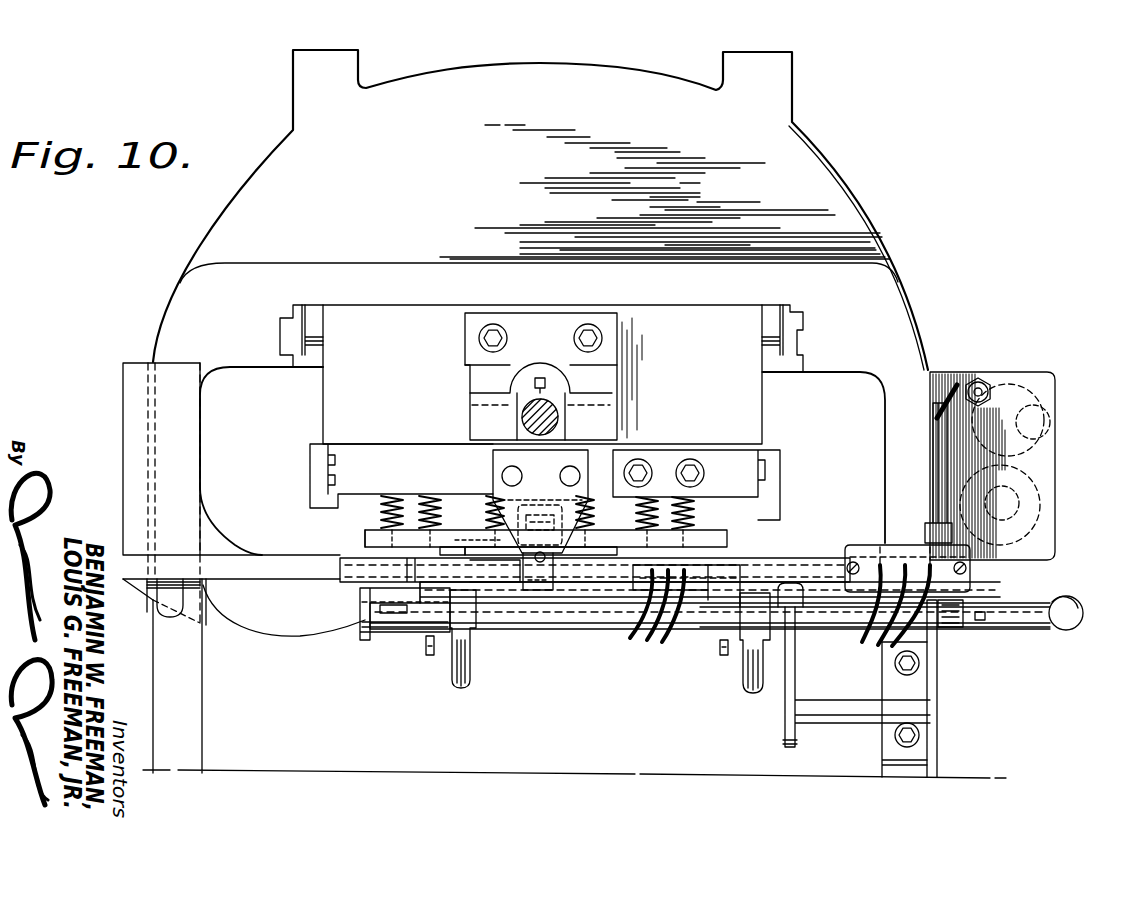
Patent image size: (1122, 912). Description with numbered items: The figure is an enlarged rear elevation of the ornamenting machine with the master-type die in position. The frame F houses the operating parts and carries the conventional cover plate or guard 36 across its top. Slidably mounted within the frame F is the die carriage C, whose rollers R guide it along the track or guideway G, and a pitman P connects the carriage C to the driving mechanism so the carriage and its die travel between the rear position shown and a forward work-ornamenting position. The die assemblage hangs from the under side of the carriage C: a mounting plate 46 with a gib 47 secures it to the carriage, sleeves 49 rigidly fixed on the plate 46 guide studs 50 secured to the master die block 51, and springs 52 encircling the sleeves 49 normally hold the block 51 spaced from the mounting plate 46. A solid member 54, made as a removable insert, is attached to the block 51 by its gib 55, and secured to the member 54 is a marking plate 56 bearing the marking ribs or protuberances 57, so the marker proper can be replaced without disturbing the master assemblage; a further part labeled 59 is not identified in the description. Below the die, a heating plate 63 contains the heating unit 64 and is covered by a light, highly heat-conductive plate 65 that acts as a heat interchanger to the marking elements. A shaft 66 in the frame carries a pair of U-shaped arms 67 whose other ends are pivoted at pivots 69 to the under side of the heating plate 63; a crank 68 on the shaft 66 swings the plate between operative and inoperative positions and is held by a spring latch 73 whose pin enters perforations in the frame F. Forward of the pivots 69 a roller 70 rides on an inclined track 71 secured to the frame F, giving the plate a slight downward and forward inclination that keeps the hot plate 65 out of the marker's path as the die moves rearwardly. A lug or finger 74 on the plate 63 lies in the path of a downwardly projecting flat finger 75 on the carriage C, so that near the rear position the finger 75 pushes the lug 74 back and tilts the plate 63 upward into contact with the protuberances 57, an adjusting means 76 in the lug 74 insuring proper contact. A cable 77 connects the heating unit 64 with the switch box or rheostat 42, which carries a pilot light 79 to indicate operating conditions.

The cover plate or guard 36 is at (850, 183).
The frame F is at (887, 290).
The die carriage C is at (433, 317).
The pitman P is at (556, 406).
The rollers R is at (313, 313).
The track or guideway G is at (290, 338).
The mounting plate 46 is at (362, 490).
The gib 47 is at (540, 490).
The sleeves 49 is at (383, 508).
The studs 50 is at (727, 539).
The master die block 51 is at (366, 535).
The springs 52 is at (696, 508).
The solid member 54 is at (470, 549).
The gib 55 is at (477, 538).
The marking plate 56 is at (498, 565).
The marking ribs or protuberances 57 is at (520, 570).
The spring 59 is at (638, 505).
The heating plate 63 is at (600, 575).
The heating unit 64 is at (590, 590).
The heat conductive plate 65 is at (710, 615).
The shaft 66 is at (833, 619).
The U-shaped arms 67 is at (745, 675).
The crank 68 is at (1050, 628).
The pivots 69 is at (432, 632).
The roller 70 is at (782, 582).
The inclined track 71 is at (785, 725).
The spring latch 73 is at (977, 630).
The lug or finger 74 is at (523, 588).
The flat finger 75 is at (622, 502).
The adjusting means 76 is at (542, 588).
The cable 77 is at (688, 638).
The pilot light 79 is at (1010, 400).
The switch box or rheostat 42 is at (1040, 453).